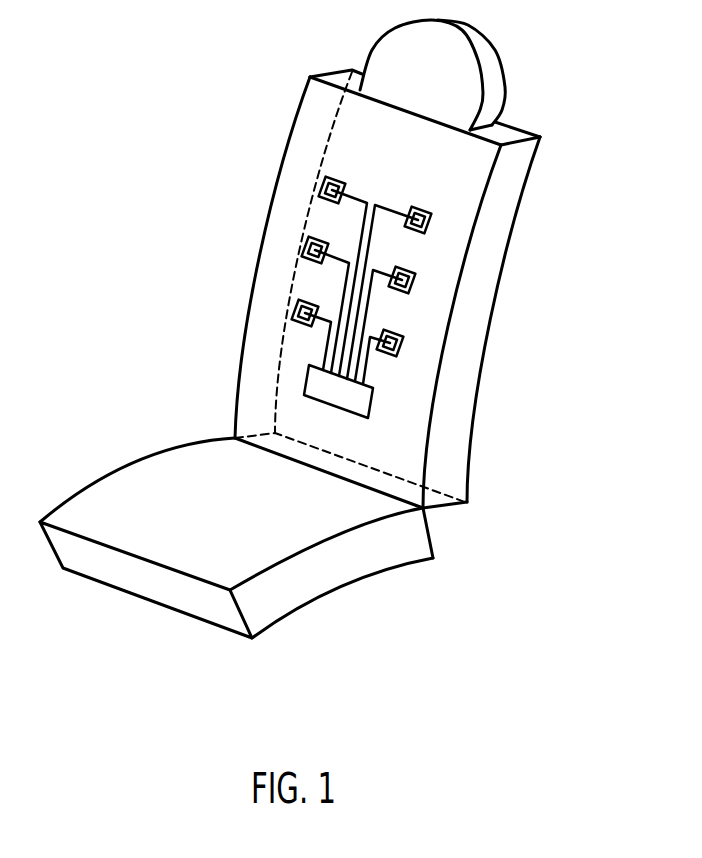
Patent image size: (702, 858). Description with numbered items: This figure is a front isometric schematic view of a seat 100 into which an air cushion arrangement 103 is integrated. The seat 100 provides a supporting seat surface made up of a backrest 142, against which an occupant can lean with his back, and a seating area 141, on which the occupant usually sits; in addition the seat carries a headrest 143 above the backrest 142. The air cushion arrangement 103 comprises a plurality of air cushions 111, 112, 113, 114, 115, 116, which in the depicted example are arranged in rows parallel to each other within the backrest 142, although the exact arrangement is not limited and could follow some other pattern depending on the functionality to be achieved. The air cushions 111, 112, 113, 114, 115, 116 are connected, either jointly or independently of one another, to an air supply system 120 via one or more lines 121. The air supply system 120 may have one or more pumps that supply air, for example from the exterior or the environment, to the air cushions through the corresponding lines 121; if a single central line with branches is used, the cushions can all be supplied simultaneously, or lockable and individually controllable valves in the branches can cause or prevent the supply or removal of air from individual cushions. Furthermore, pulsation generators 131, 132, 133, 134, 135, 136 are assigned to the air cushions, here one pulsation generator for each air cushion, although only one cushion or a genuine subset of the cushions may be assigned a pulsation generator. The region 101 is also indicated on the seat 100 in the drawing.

The seat 100 is at (301, 319).
The sensor arrangement region 101 is at (405, 437).
The air cushion arrangement 103 is at (357, 132).
The air cushion 111 is at (431, 228).
The air cushion 112 is at (416, 288).
The air cushion 113 is at (405, 350).
The air cushion 114 is at (318, 190).
The air cushion 115 is at (303, 250).
The air cushion 116 is at (283, 313).
The air supply system 120 is at (340, 398).
The lines 121 is at (382, 197).
The pulsation generator 131 is at (428, 207).
The pulsation generator 132 is at (413, 270).
The pulsation generator 133 is at (401, 334).
The pulsation generator 134 is at (320, 180).
The pulsation generator 135 is at (308, 243).
The pulsation generator 136 is at (292, 303).
The seating area 141 is at (105, 492).
The backrest 142 is at (422, 413).
The headrest 143 is at (492, 55).